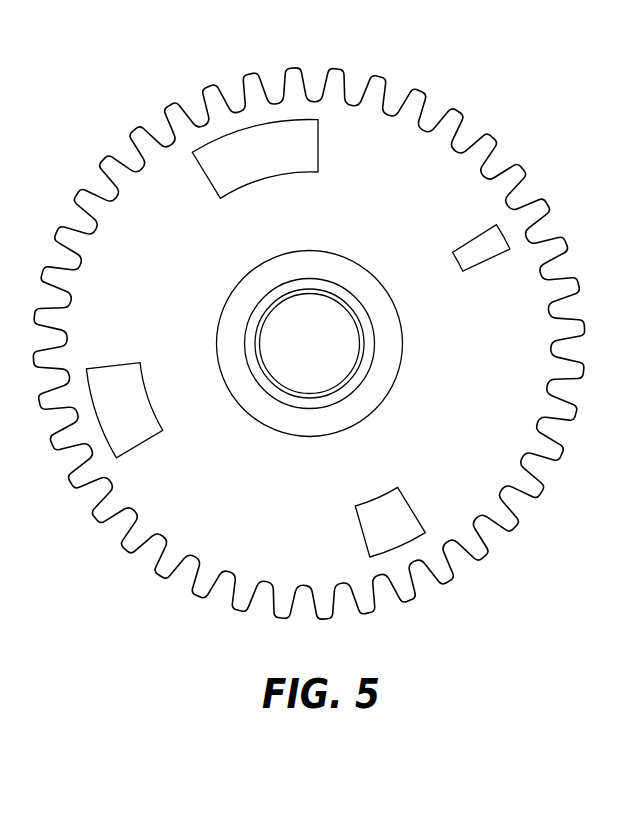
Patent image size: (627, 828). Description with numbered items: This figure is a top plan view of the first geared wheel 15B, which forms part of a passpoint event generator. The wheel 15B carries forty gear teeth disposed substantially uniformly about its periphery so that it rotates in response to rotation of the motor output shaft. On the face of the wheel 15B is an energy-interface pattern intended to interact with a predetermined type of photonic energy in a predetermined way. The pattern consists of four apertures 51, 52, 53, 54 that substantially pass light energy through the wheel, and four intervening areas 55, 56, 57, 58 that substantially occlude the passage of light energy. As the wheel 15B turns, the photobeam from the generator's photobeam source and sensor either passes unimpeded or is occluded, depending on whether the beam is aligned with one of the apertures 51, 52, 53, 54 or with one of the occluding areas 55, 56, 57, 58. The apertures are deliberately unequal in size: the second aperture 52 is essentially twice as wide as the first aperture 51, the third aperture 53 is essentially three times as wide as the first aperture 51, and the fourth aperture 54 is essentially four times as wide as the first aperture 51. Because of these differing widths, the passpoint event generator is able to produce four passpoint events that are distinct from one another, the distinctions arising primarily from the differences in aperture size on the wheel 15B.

The first geared wheel 15B is at (541, 491).
The first aperture 51 is at (472, 243).
The second aperture 52 is at (412, 508).
The third aperture 53 is at (115, 364).
The fourth aperture 54 is at (262, 183).
The intervening area 55 is at (420, 192).
The intervening area 56 is at (164, 276).
The intervening area 57 is at (251, 520).
The intervening area 58 is at (504, 408).